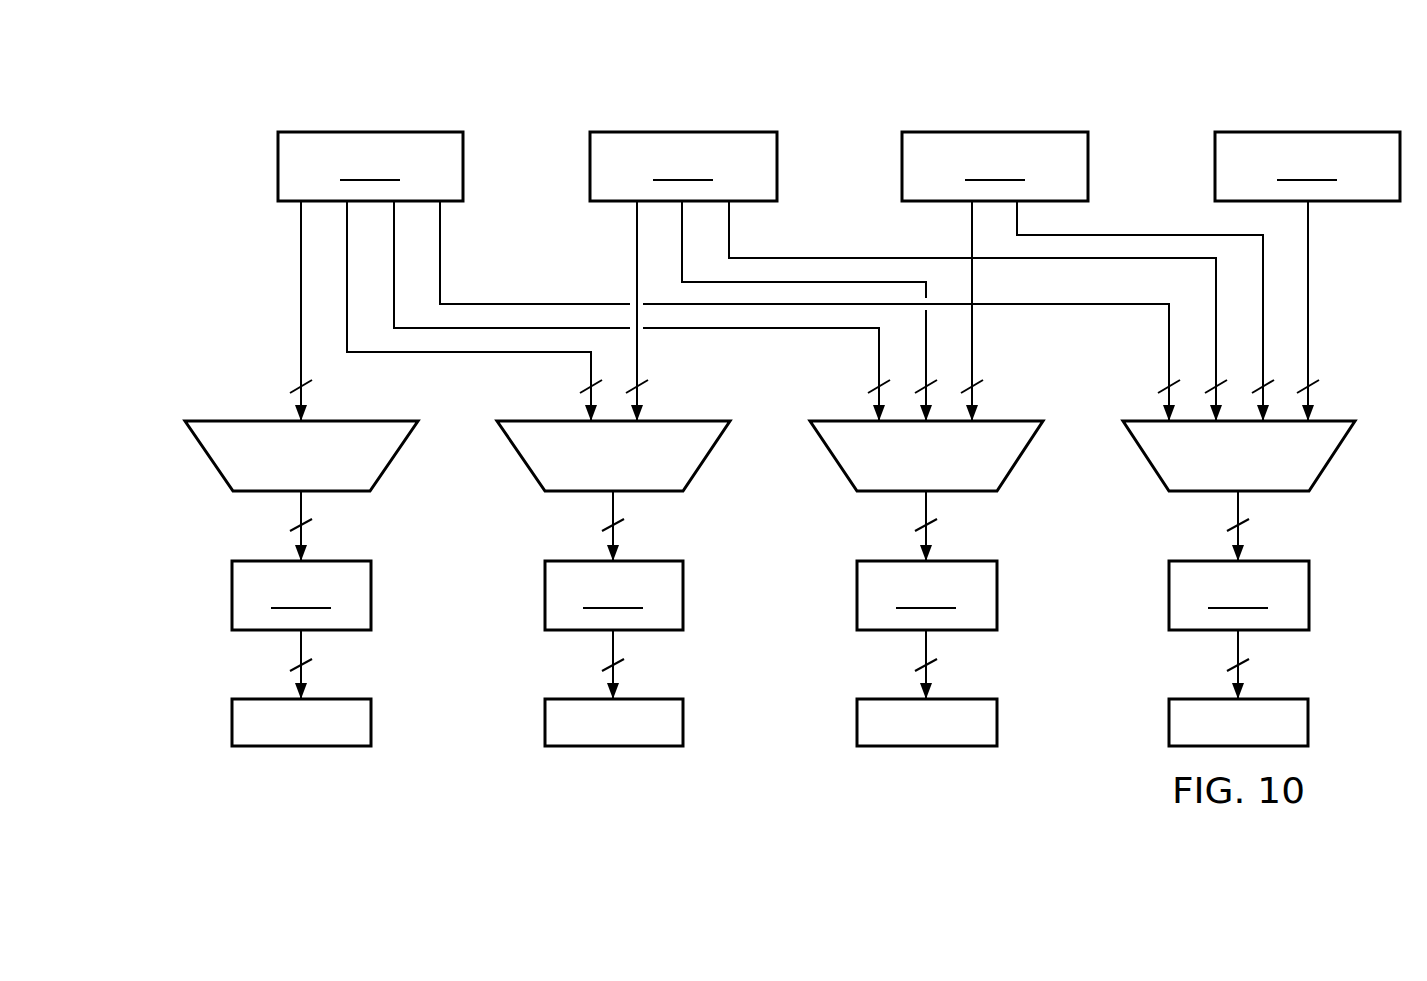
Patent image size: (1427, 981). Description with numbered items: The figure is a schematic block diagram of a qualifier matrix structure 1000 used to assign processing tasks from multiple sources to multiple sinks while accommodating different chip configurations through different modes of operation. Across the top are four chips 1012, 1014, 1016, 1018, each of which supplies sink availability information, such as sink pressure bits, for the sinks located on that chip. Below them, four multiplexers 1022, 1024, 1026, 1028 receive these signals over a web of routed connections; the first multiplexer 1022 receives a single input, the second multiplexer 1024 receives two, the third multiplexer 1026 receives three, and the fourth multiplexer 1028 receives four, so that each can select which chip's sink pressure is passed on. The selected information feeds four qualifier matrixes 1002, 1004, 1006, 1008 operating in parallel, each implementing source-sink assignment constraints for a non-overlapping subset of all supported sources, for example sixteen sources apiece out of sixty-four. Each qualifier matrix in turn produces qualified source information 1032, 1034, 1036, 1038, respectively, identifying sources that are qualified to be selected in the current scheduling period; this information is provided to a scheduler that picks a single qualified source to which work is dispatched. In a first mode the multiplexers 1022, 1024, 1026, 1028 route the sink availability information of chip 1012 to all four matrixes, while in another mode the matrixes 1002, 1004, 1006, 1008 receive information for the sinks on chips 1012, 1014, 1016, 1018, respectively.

The qualifier matrix structure 1000 is at (1230, 92).
The chip 1012 is at (370, 166).
The chip 1014 is at (683, 166).
The chip 1016 is at (995, 166).
The chip 1018 is at (1307, 166).
The multiplexer 1022 is at (208, 455).
The multiplexer 1024 is at (520, 455).
The multiplexer 1026 is at (1020, 455).
The multiplexer 1028 is at (1332, 455).
The qualifier matrix 1002 is at (301, 595).
The qualifier matrix 1004 is at (614, 595).
The qualifier matrix 1006 is at (927, 595).
The qualifier matrix 1008 is at (1239, 595).
The qualified source information 1032 is at (232, 722).
The qualified source information 1034 is at (545, 722).
The qualified source information 1036 is at (997, 722).
The qualified source information 1038 is at (1308, 722).